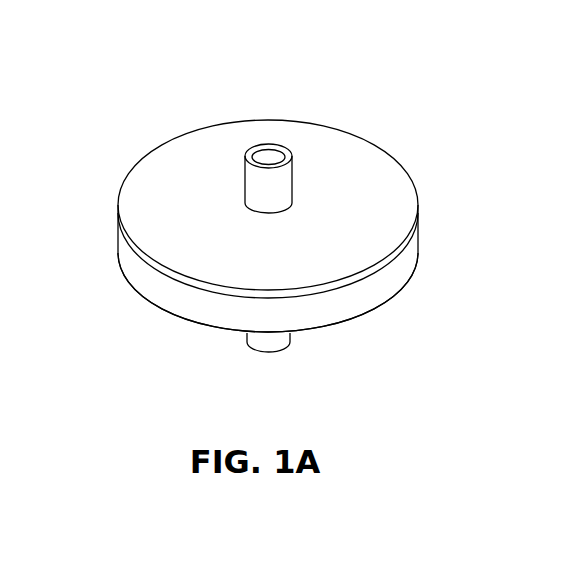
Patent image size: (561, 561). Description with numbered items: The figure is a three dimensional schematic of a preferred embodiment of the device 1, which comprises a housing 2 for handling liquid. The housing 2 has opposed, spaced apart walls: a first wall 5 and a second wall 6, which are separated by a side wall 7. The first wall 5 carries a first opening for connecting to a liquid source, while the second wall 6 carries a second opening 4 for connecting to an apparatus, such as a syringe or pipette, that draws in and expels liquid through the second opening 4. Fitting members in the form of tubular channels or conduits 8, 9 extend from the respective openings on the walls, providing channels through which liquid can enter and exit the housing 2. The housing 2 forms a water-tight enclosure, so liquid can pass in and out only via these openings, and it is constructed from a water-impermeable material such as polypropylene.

The device 1 is at (125, 347).
The housing 2 is at (345, 132).
The second opening 4 is at (268, 162).
The first wall 5 is at (342, 323).
The second wall 6 is at (156, 170).
The side wall 7 is at (385, 285).
The tubular channel or conduit 8 is at (280, 180).
The tubular channel or conduit 9 is at (247, 338).